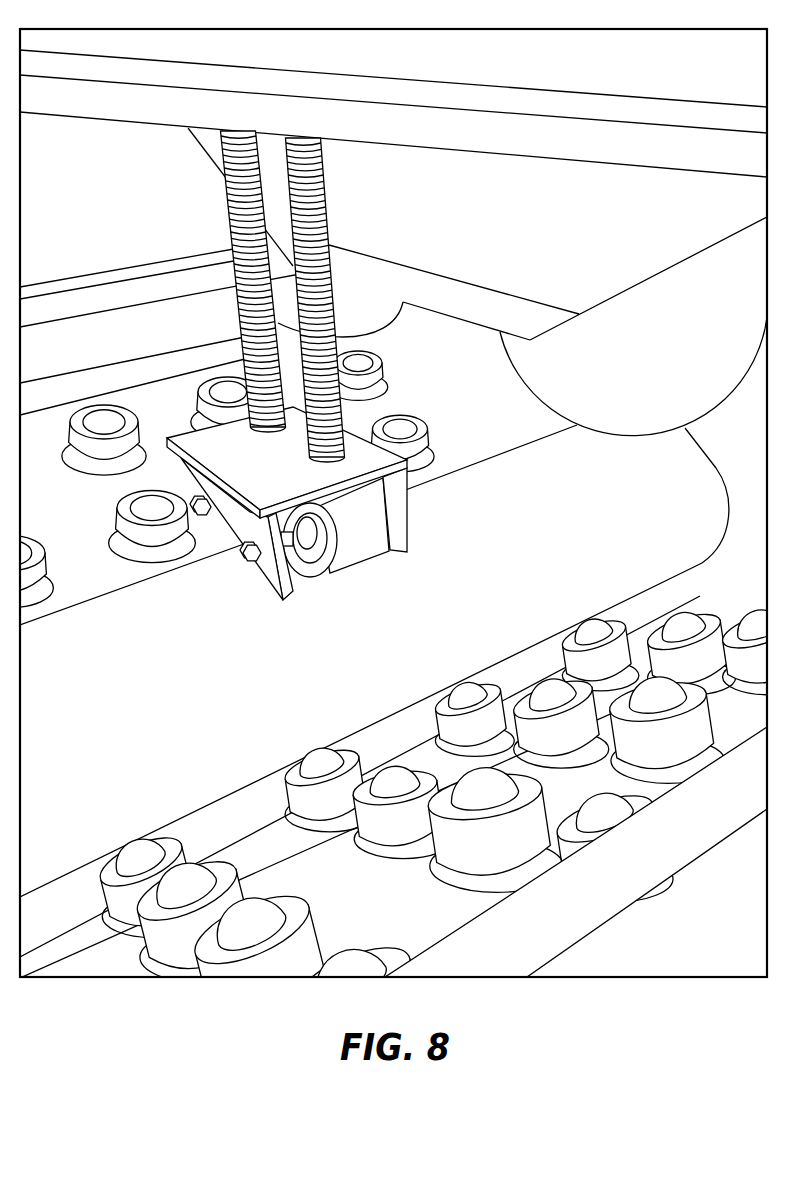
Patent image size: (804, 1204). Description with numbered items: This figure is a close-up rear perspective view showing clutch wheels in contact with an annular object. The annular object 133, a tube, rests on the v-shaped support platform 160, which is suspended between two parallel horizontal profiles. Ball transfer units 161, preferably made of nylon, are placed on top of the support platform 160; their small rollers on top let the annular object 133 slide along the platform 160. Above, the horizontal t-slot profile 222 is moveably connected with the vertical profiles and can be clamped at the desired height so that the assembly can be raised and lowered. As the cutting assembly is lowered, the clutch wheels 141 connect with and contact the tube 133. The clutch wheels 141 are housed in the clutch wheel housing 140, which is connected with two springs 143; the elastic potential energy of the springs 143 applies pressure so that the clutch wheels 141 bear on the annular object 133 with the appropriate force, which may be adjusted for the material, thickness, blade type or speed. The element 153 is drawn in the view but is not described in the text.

The t-slot profile 222 is at (510, 66).
The spring 143 is at (329, 262).
The guide rail 153 is at (385, 324).
The clutch wheel housing 140 is at (407, 502).
The clutch wheel 141 is at (357, 552).
The annular object 133 is at (187, 720).
The support platform 160 is at (412, 826).
The ball transfer unit 161 is at (508, 848).